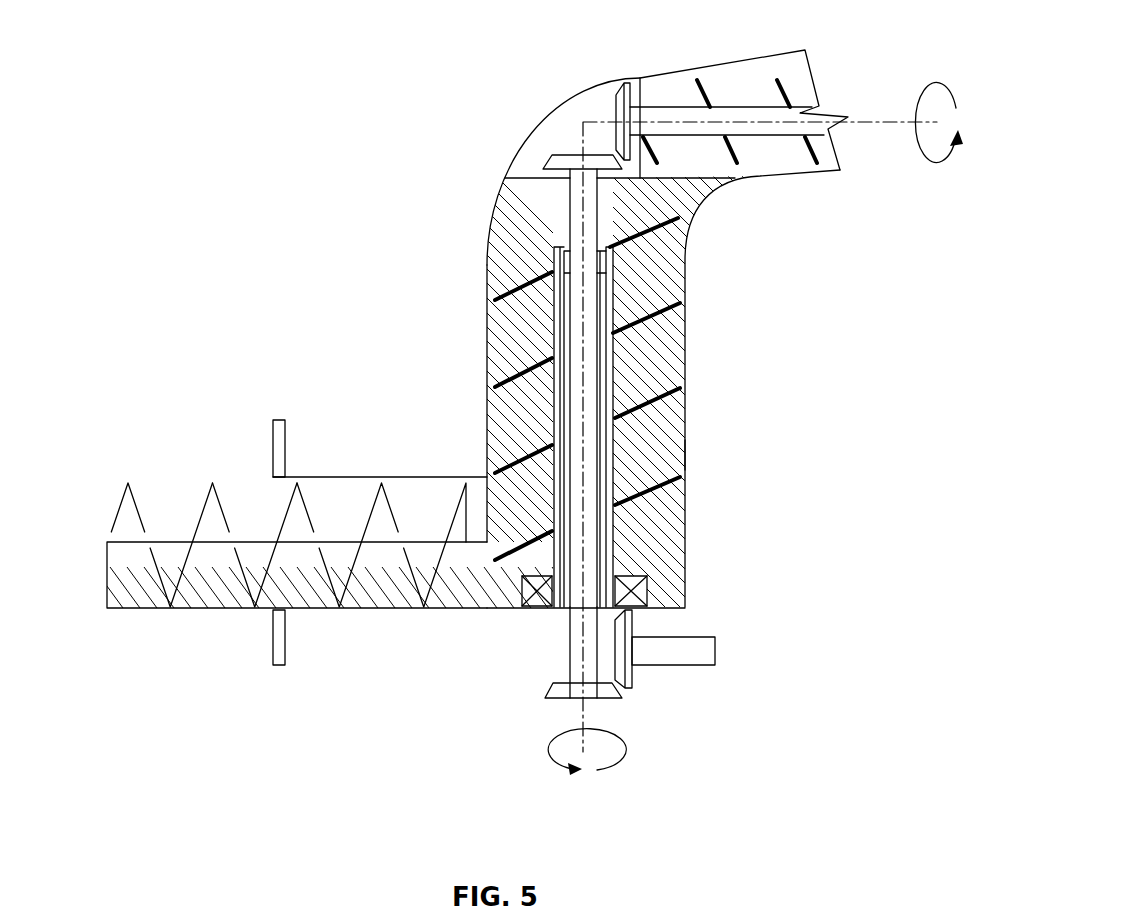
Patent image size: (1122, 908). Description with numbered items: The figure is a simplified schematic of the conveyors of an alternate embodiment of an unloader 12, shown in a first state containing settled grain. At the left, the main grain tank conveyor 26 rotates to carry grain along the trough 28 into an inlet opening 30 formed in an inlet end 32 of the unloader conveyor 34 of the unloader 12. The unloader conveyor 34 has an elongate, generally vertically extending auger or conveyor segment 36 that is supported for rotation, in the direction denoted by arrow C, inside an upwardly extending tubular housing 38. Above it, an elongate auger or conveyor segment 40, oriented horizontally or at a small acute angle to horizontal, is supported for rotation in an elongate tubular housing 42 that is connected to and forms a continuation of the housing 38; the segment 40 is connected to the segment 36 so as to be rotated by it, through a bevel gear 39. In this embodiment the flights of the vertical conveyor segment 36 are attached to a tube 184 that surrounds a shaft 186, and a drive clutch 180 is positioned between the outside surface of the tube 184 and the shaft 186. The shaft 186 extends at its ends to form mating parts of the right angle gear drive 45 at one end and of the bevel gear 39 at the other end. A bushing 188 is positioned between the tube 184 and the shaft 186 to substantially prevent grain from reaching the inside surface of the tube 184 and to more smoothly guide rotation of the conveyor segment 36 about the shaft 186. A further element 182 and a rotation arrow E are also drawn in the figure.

The unloader 12 is at (312, 361).
The main grain tank conveyor 26 is at (115, 489).
The trough 28 is at (122, 608).
The inlet opening 30 is at (260, 497).
The inlet end 32 is at (345, 475).
The unloader conveyor 34 is at (690, 390).
The conveyor segment 36 is at (667, 315).
The tubular housing 38 is at (685, 453).
The bevel gear 39 is at (555, 95).
The conveyor segment 40 is at (778, 83).
The tubular housing 42 is at (707, 57).
The right angle gear drive 45 is at (634, 698).
The drive clutch 180 is at (650, 597).
The inner sleeve 182 is at (612, 514).
The tube 184 is at (617, 437).
The shaft 186 is at (570, 647).
The bushing 188 is at (565, 247).
The rotation direction E is at (937, 162).
The arrow C is at (546, 748).